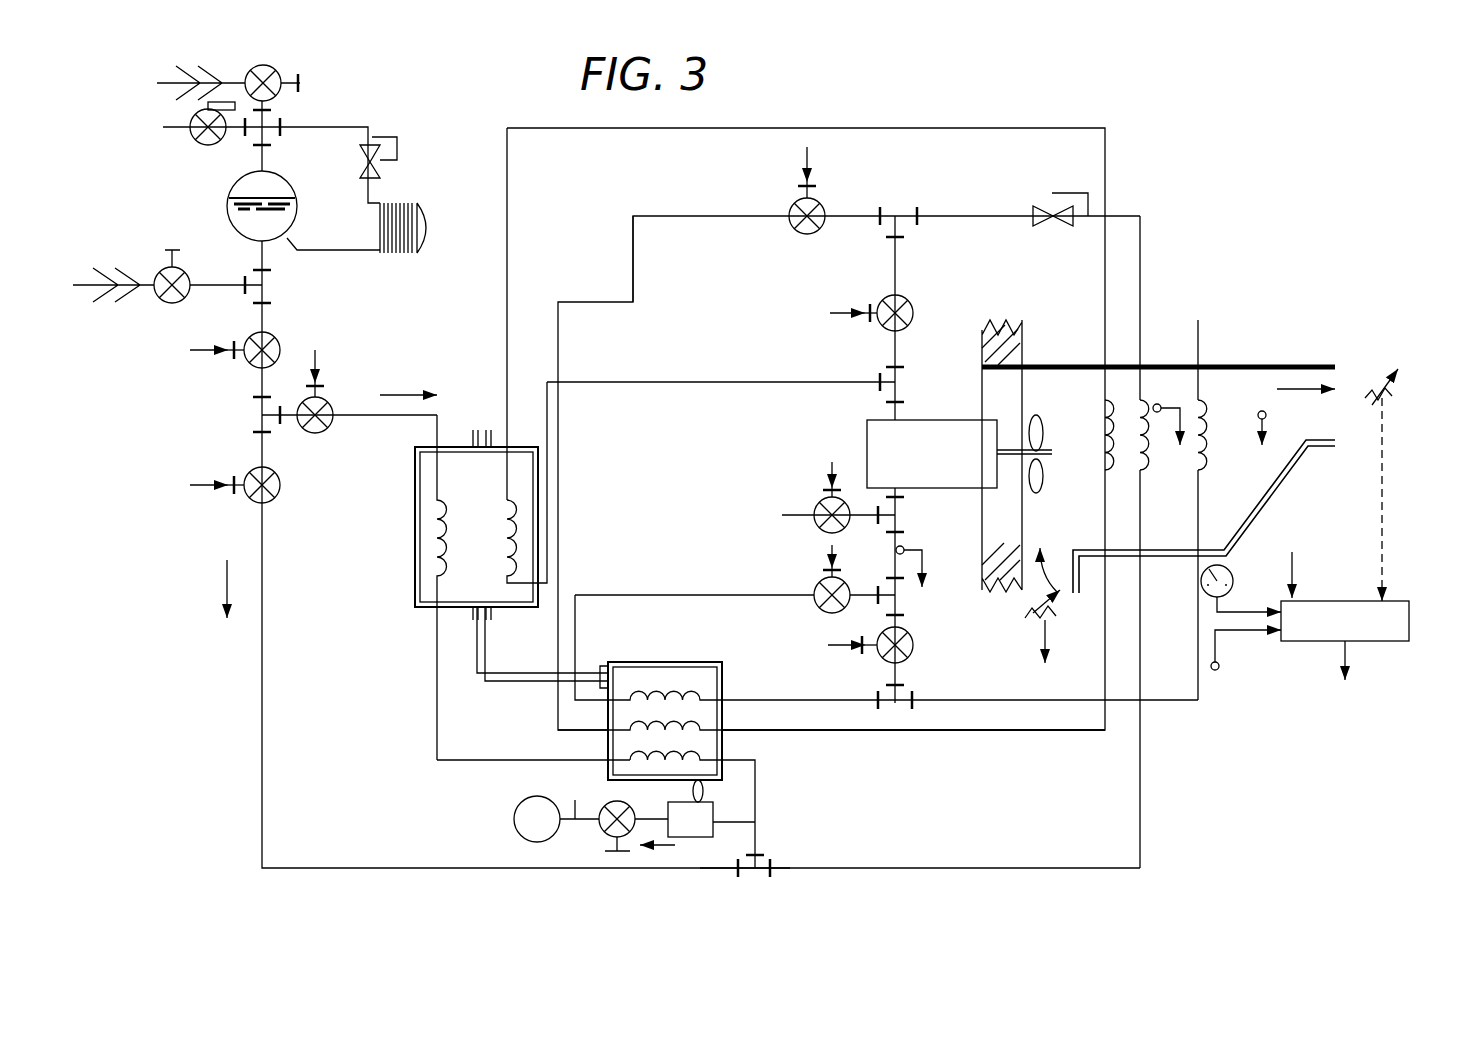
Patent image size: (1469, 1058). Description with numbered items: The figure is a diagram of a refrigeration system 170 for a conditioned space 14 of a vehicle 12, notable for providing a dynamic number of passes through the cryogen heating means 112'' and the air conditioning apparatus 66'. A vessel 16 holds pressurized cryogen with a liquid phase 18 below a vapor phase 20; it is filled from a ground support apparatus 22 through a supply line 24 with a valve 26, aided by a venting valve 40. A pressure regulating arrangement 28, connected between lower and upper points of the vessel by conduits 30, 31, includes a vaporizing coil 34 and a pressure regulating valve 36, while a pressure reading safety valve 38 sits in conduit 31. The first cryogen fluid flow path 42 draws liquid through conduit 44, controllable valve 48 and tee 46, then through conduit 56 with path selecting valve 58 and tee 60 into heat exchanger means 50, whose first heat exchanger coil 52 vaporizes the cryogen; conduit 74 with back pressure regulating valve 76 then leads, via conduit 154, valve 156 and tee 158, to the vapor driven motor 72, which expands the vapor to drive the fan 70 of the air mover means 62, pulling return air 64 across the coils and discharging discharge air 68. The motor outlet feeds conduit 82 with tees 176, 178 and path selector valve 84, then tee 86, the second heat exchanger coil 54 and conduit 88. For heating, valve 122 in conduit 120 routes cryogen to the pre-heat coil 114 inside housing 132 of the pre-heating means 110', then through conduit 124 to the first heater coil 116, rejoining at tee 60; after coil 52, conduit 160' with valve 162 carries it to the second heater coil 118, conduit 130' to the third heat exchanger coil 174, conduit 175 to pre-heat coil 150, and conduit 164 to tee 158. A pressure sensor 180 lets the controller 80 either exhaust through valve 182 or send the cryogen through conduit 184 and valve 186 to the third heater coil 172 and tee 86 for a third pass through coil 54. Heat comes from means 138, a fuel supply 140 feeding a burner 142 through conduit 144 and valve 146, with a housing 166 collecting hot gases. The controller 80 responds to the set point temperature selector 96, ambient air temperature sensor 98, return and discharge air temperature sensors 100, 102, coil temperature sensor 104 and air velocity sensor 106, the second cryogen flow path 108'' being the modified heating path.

The vehicle 12 is at (982, 328).
The conditioned space 14 is at (1364, 451).
The vessel 16 is at (297, 228).
The liquid phase 18 is at (228, 232).
The vapor phase 20 is at (290, 182).
The ground support apparatus 22 is at (96, 300).
The supply line 24 is at (210, 288).
The valve 26 is at (152, 280).
The pressure regulating arrangement 28 is at (414, 195).
The conduit 30 is at (300, 240).
The conduit 31 is at (322, 127).
The vaporizing coil 34 is at (420, 250).
The pressure regulating valve 36 is at (360, 160).
The pressure reading safety valve 38 is at (200, 143).
The venting valve 40 is at (276, 71).
The first cryogen fluid flow path 42 is at (222, 590).
The conduit 44 is at (262, 310).
The tee 46 is at (262, 417).
The controllable valve 48 is at (246, 364).
The heat exchanger means 50 is at (1087, 403).
The first heat exchanger coil 52 is at (1148, 468).
The second heat exchanger coil 54 is at (1208, 452).
The conduit 56 is at (262, 730).
The controllable path selecting valve 58 is at (282, 484).
The tee 60 is at (755, 868).
The air mover means 62 is at (972, 413).
The return air 64 is at (1037, 528).
The air conditioning apparatus 66' is at (1268, 338).
The discharge air 68 is at (1335, 385).
The fan 70 is at (1043, 478).
The vapor driven motor 72 is at (867, 430).
The conduit 74 is at (1140, 232).
The back pressure regulating valve 76 is at (1060, 228).
The controller 80 is at (1380, 641).
The conduit 82 is at (960, 700).
The controllable path selector valve 84 is at (885, 660).
The tee 86 is at (897, 704).
The conduit 88 is at (1198, 325).
The set point temperature selector 96 is at (1232, 572).
The ambient air temperature sensor 98 is at (1219, 666).
The return air temperature sensor 100 is at (1030, 620).
The discharge air temperature sensor 102 is at (1395, 392).
The temperature sensor 104 is at (1175, 390).
The air velocity sensor 106 is at (1266, 412).
The second cryogen flow path 108'' is at (437, 374).
The cryogen pre-heating means 110' is at (451, 542).
The cryogen heating means 112'' is at (665, 690).
The pre-heat coil 114 is at (437, 500).
The first heater coil 116 is at (700, 758).
The second heater coil 118 is at (700, 728).
The conduit 120 is at (360, 415).
The controllable path selecting valve 122 is at (332, 395).
The conduit 124 is at (437, 710).
The conduit 130' is at (913, 760).
The housing 132 is at (415, 535).
The means for adding heat 138 is at (487, 865).
The fuel supply 140 is at (514, 826).
The burner 142 is at (755, 845).
The conduit 144 is at (577, 816).
The controllable valve 146 is at (605, 828).
The pre-heat coil 150 is at (510, 532).
The conduit 154 is at (895, 348).
The controllable path selecting valve 156 is at (912, 305).
The tee 158 is at (895, 385).
The conduit 160' is at (627, 232).
The controllable path selector valve 162 is at (790, 206).
The conduit 164 is at (762, 382).
The housing 166 is at (608, 750).
The refrigeration system 170 is at (484, 98).
The third heater coil 172 is at (700, 692).
The third heat exchanger coil 174 is at (1105, 448).
The conduit 175 is at (978, 128).
The tee 176 is at (895, 512).
The tee 178 is at (895, 600).
The pressure sensor 180 is at (912, 548).
The valve 182 is at (820, 505).
The conduit 184 is at (750, 595).
The controllable path selecting valve 186 is at (820, 582).